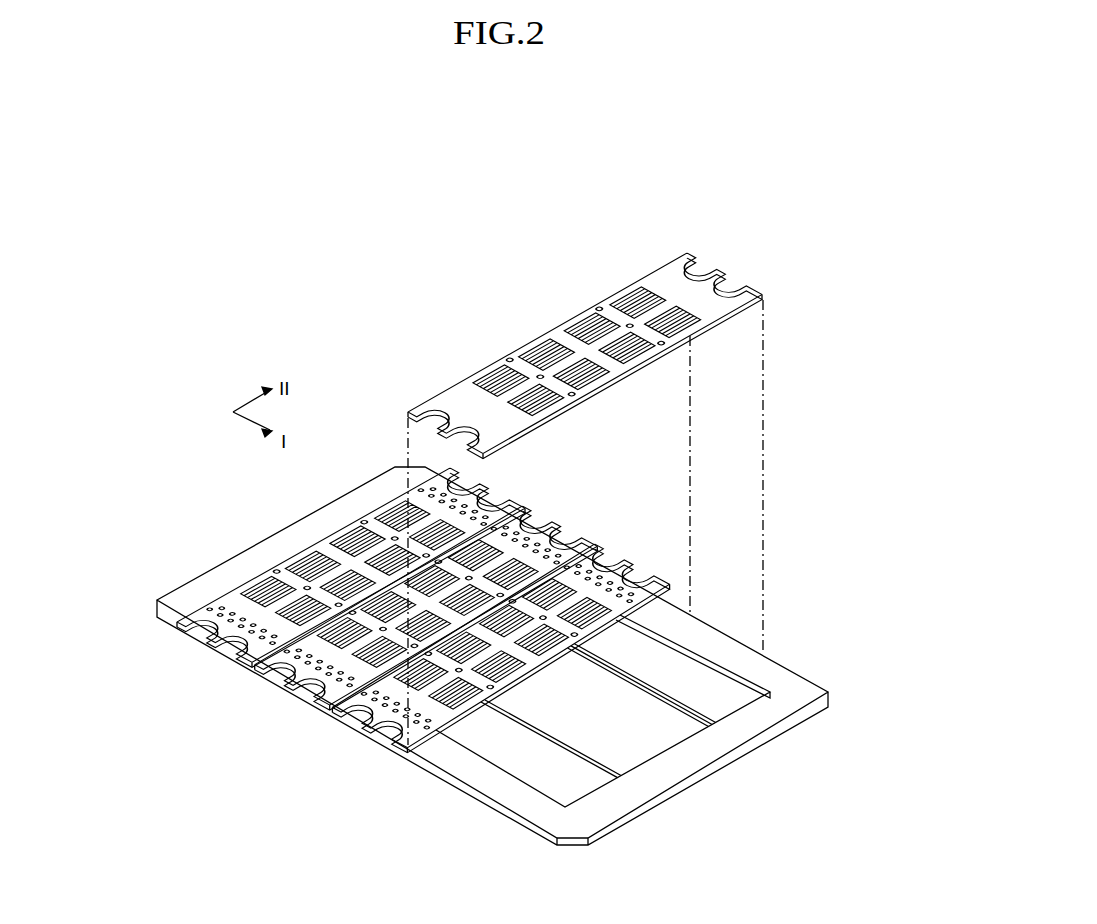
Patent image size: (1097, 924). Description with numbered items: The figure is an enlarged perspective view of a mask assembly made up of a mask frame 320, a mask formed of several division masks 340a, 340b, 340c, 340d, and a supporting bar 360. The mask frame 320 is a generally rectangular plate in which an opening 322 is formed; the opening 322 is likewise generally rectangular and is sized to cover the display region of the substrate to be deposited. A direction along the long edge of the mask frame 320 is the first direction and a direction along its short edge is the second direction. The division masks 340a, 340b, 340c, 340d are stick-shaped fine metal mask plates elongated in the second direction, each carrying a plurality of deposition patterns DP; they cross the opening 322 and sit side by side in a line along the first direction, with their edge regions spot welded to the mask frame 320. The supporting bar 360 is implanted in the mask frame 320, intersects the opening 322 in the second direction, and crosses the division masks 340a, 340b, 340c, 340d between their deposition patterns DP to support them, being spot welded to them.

The mask frame 320 is at (608, 812).
The opening 322 is at (608, 718).
The supporting bar 360 is at (708, 715).
The division mask 340a is at (344, 583).
The division mask 340b is at (283, 682).
The division mask 340c is at (357, 720).
The division mask 340d is at (713, 277).
The deposition pattern DP is at (298, 565).